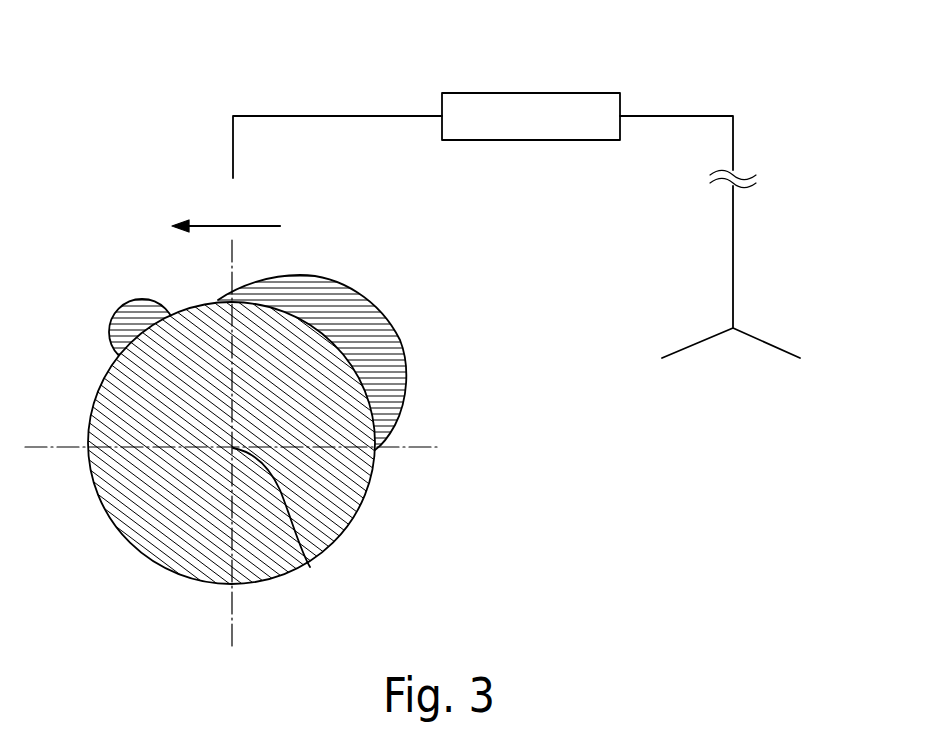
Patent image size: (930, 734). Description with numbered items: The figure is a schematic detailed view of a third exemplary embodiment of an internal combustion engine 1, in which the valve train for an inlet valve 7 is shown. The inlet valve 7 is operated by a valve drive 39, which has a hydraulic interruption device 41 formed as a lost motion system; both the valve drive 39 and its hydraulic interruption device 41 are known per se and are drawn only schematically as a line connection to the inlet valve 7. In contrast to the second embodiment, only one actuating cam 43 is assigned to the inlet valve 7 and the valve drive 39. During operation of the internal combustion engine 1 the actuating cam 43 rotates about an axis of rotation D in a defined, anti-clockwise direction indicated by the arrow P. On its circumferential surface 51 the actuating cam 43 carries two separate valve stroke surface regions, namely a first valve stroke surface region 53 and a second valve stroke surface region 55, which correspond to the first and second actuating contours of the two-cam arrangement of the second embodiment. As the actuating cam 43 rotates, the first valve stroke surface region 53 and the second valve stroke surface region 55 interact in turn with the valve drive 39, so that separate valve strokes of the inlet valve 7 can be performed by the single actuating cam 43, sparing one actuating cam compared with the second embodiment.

The internal combustion engine 1 is at (751, 74).
The inlet valve 7 is at (733, 247).
The valve drive 39 is at (196, 92).
The hydraulic interruption device 41 is at (530, 92).
The actuating cam 43 is at (388, 522).
The circumferential surface 51 is at (122, 537).
The first valve stroke surface region 53 is at (132, 300).
The second valve stroke surface region 55 is at (332, 279).
The axis of rotation D is at (310, 567).
The arrow P is at (263, 224).